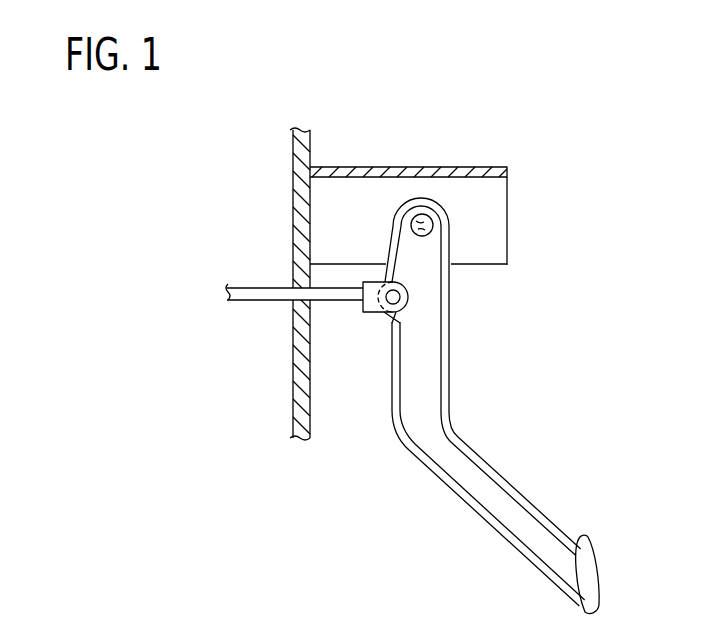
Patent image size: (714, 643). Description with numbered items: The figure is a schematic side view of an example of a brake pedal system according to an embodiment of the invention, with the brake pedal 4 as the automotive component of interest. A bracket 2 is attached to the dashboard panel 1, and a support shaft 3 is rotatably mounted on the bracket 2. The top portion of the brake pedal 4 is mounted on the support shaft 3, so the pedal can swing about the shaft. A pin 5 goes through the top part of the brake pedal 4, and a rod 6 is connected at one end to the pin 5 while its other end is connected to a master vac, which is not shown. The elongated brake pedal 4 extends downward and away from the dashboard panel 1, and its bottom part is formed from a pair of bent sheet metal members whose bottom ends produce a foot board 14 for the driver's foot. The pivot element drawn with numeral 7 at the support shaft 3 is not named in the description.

The wall / bulkhead 1 is at (293, 407).
The mounting bracket / housing plate 2 is at (444, 165).
The pedal arm bearing loop (section III-III) 3 is at (430, 236).
The pedal arm (section IV-IV) 4 is at (455, 373).
The coupling block with pin (section V-V) 5 is at (390, 318).
The push rod 6 is at (248, 296).
The pivot pin 7 is at (430, 222).
The pedal pad 14 is at (597, 583).